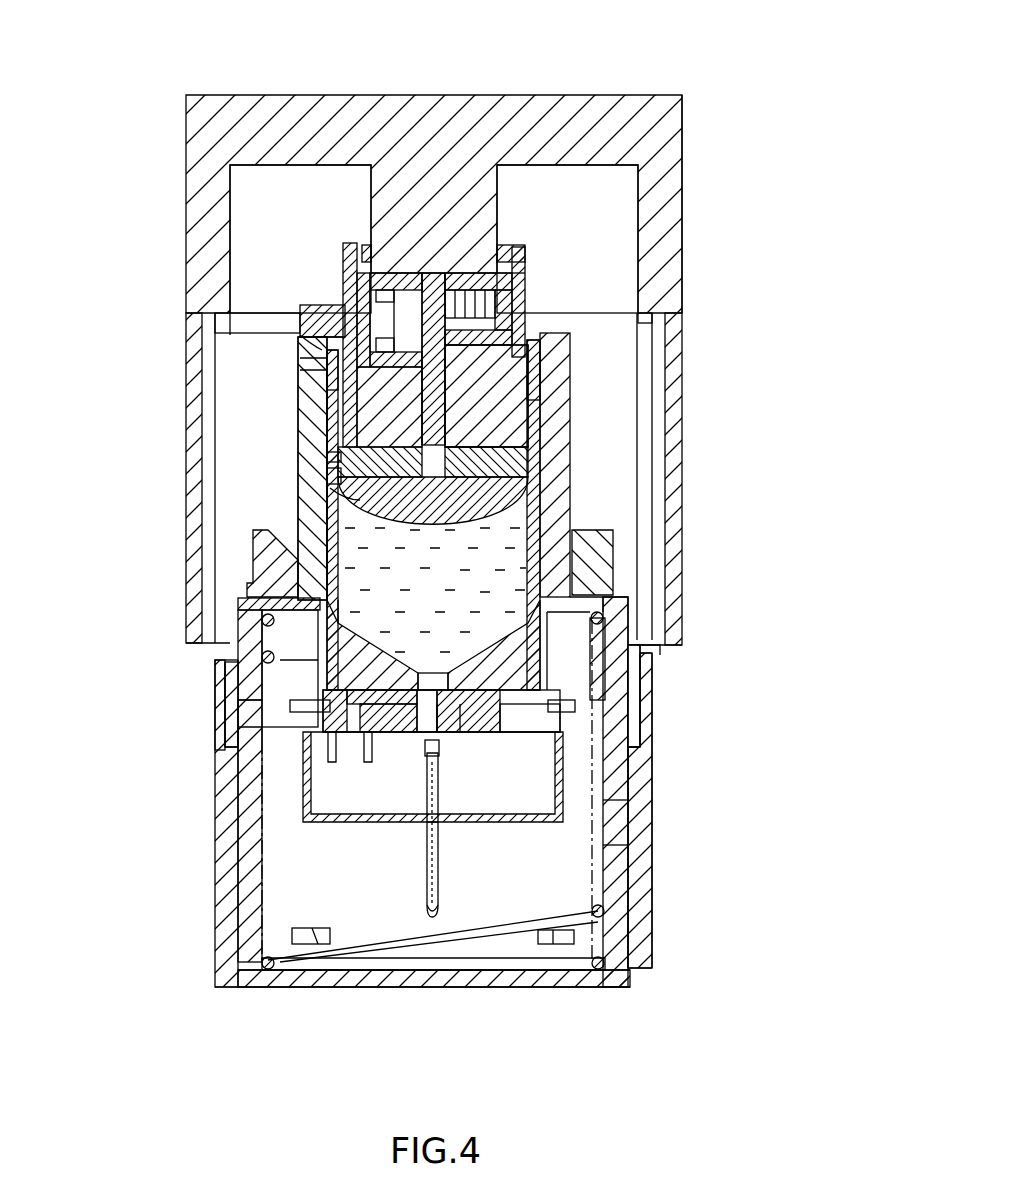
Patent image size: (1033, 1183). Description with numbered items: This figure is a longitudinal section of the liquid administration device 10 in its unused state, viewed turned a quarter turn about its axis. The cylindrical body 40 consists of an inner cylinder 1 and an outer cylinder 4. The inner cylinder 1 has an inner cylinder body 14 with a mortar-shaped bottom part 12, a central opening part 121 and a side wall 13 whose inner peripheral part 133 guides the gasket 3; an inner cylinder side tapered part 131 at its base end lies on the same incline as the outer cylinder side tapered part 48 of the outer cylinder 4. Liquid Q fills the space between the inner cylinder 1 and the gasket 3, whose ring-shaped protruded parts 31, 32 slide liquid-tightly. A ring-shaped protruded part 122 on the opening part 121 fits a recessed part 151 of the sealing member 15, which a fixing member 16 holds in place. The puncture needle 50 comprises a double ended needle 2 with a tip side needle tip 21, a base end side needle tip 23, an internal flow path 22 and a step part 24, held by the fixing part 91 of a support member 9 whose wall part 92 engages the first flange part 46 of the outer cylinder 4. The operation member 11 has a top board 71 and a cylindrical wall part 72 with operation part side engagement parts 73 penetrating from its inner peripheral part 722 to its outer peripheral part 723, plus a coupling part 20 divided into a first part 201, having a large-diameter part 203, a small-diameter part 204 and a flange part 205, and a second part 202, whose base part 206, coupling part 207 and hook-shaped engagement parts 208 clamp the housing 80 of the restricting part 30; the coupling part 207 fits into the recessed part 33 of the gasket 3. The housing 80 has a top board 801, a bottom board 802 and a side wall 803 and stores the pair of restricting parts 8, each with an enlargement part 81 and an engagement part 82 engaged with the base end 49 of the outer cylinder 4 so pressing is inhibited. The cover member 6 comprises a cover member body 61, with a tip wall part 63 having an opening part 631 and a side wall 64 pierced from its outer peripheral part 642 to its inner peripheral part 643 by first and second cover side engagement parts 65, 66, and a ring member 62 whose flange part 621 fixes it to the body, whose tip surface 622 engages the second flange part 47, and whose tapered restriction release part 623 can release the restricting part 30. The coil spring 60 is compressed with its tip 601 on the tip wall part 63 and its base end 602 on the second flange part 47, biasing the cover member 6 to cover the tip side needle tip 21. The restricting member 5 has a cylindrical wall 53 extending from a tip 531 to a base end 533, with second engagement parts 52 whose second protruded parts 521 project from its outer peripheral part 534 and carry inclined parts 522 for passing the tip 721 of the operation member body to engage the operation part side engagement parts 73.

The liquid administration device 10 is at (708, 58).
The operation member 11 is at (686, 162).
The top board 71 is at (592, 110).
The wall part 72 is at (192, 192).
The operation part side engagement part 73 is at (232, 318).
The inner peripheral part 722 is at (660, 384).
The outer peripheral part 723 is at (672, 352).
The first part 201 is at (480, 190).
The top board 801 is at (410, 290).
The enlargement part 81 is at (432, 300).
The coupling part 20 is at (510, 200).
The large-diameter part 203 is at (388, 198).
The restricting part 30 is at (548, 248).
The engagement part 82 is at (322, 318).
The restricting part 8 is at (298, 308).
The flange part 205 is at (348, 262).
The engagement part 208 is at (366, 245).
The housing 80 is at (520, 290).
The side wall 803 is at (520, 302).
The inner cylinder 1 is at (318, 438).
The outer cylinder 4 is at (300, 412).
The cylindrical body 40 is at (124, 442).
The small-diameter part 204 is at (300, 402).
The base end 49 is at (300, 336).
The outer cylinder side tapered part 48 is at (302, 360).
The inner cylinder side tapered part 131 is at (328, 376).
The second part 202 is at (490, 405).
The base part 206 is at (0, 0).
The bottom board 802 is at (530, 364).
The recessed part 33 is at (500, 460).
The coupling part 207 is at (470, 490).
The protruded part 32 is at (328, 457).
The gasket 3 is at (330, 475).
The protruded part 31 is at (340, 498).
The liquid Q is at (490, 582).
The base end 602 is at (340, 604).
The opening part 121 is at (430, 668).
The inner peripheral part 133 is at (310, 540).
The flange part 621 is at (260, 600).
The second flange part 47 is at (262, 618).
The tip surface 622 is at (262, 655).
The side wall 13 is at (255, 645).
The bottom part 12 is at (290, 665).
The inner cylinder body 14 is at (112, 672).
The restriction release part 623 is at (612, 540).
The ring member 62 is at (622, 548).
The cover member 6 is at (786, 528).
The cover member body 61 is at (652, 706).
The tip 721 is at (652, 648).
The base end 533 is at (648, 660).
The inclined part 522 is at (646, 680).
The second protruded part 521 is at (648, 700).
The second engagement part 52 is at (650, 733).
The outer peripheral part 534 is at (646, 750).
The restricting member 5 is at (652, 880).
The side wall 64 is at (620, 802).
The outer peripheral part 642 is at (622, 824).
The inner peripheral part 643 is at (622, 850).
The cylindrical wall 53 is at (640, 905).
The tip 531 is at (636, 975).
The tip wall part 63 is at (565, 990).
The opening part 631 is at (508, 990).
The tip 601 is at (282, 992).
The coil spring 60 is at (258, 965).
The first cover side engagement part 65 is at (300, 936).
The second cover side engagement part 66 is at (300, 706).
The first flange part 46 is at (258, 735).
The wall part 92 is at (300, 795).
The fixing part 91 is at (378, 812).
The support member 9 is at (0, 0).
The double ended needle 2 is at (0, 0).
The puncture needle 50 is at (160, 810).
The fixing member 16 is at (346, 745).
The sealing member 15 is at (372, 745).
The base end side needle tip 23 is at (425, 752).
The protruded part 122 is at (452, 726).
The recessed part 151 is at (480, 728).
The flow path 22 is at (440, 870).
The step part 24 is at (440, 822).
The tip side needle tip 21 is at (440, 914).